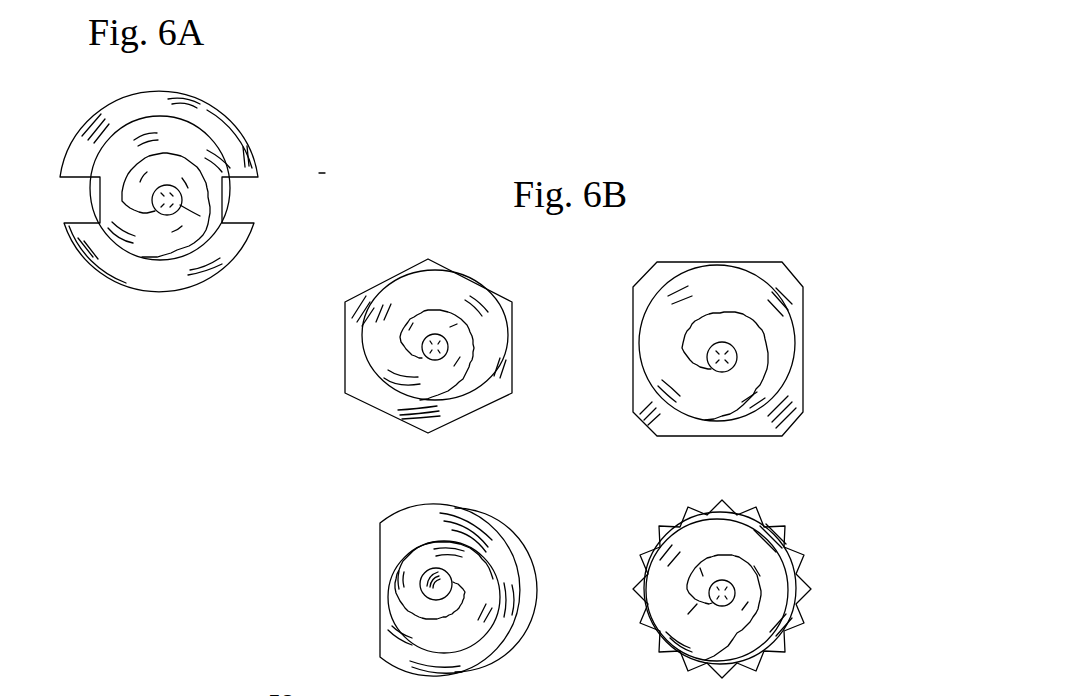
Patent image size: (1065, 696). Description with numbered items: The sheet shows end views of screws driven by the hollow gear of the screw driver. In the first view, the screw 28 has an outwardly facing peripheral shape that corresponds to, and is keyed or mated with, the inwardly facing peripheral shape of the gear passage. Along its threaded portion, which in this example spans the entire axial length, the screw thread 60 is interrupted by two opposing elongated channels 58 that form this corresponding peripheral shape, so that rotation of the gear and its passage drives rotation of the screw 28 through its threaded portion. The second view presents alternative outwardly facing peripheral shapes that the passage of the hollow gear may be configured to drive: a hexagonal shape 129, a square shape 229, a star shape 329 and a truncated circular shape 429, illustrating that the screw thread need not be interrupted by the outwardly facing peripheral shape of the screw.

In FIG. 6A, the screw 28 is at (168, 185).
In FIG. 6A, the screw thread 60 is at (118, 112).
In FIG. 6A, the opposing elongated channels 58 is at (235, 198).
In FIG. 6B, the hexagonal peripheral shape 129 is at (458, 275).
In FIG. 6B, the square peripheral shape 229 is at (722, 262).
In FIG. 6B, the truncated circular peripheral shape 429 is at (478, 518).
In FIG. 6B, the star peripheral shape 329 is at (760, 515).